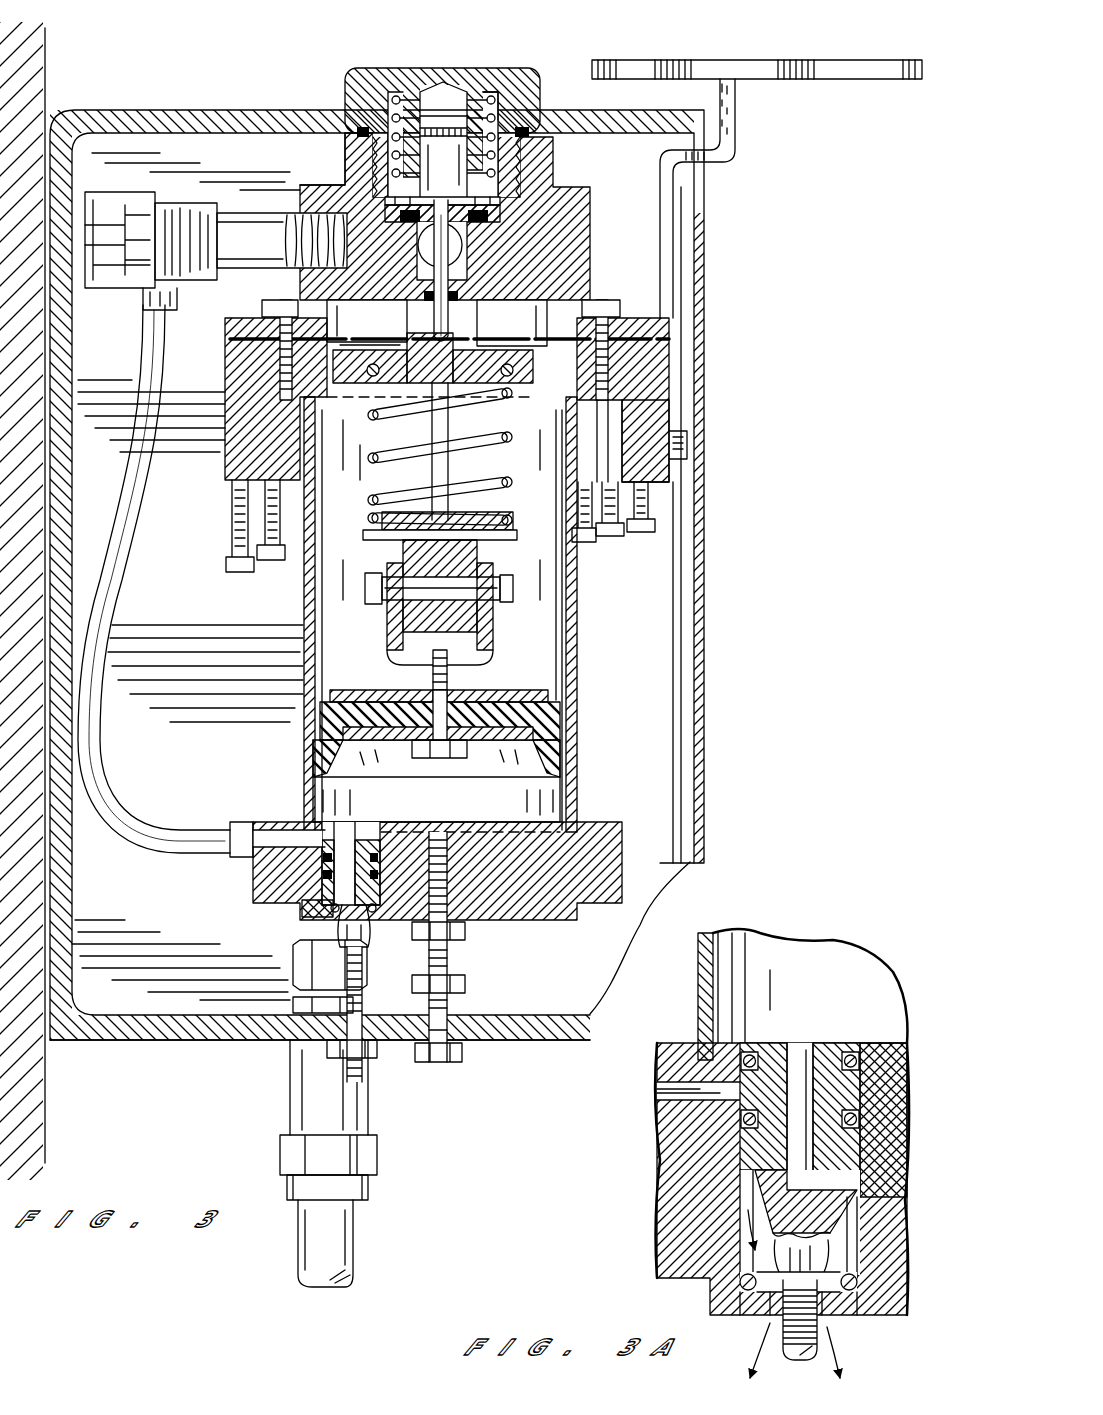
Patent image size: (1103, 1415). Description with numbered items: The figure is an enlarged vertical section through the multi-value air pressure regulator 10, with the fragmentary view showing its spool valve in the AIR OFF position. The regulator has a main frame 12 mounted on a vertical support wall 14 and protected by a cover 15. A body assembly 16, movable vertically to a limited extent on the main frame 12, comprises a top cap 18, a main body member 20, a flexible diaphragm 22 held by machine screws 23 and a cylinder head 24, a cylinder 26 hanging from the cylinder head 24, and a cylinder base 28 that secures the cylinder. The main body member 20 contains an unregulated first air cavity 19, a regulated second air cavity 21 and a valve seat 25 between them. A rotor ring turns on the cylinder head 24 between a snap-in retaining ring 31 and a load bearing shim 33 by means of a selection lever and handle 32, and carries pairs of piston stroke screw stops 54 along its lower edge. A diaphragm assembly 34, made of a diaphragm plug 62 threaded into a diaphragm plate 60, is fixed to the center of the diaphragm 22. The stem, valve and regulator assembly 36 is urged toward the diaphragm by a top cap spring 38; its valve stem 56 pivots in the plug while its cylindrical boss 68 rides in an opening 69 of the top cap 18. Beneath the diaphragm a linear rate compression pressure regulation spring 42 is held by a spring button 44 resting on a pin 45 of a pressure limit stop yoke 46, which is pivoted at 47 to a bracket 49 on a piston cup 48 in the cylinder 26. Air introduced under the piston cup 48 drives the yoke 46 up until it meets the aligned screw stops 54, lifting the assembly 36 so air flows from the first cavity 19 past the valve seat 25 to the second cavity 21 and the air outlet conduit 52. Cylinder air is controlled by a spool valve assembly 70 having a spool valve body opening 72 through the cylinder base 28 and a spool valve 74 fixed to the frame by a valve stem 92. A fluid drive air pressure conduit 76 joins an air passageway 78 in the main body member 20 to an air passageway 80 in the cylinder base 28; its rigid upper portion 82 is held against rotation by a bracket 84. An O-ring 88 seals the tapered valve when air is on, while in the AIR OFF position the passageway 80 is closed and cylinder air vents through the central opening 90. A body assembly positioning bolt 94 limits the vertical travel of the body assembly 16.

In FIG. 3, the multi-value air pressure regulator 10 is at (652, 644).
In FIG. 3, the main frame 12 is at (132, 1040).
In FIG. 3, the vertical support wall 14 is at (50, 98).
In FIG. 3, the cover 15 is at (705, 230).
In FIG. 3, the body assembly 16 is at (598, 800).
In FIG. 3, the top cap 18 is at (366, 74).
In FIG. 3, the unregulated first air cavity 19 is at (368, 182).
In FIG. 3, the main body member 20 is at (328, 180).
In FIG. 3, the regulated second air cavity 21 is at (466, 252).
In FIG. 3, the flexible diaphragm 22 is at (343, 343).
In FIG. 3, the machine screws 23 is at (612, 326).
In FIG. 3, the cylinder head 24 is at (632, 386).
In FIG. 3, the valve seat 25 is at (518, 207).
In FIG. 3, the cylinder 26 is at (306, 678).
In FIG. 3A, the cylinder 26 is at (825, 967).
In FIG. 3, the cylinder base 28 is at (598, 905).
In FIG. 3A, the cylinder base 28 is at (672, 1208).
In FIG. 3, the snap-in retaining ring 31 is at (662, 343).
In FIG. 3, the selection lever and handle 32 is at (738, 82).
In FIG. 3, the load bearing shim 33 is at (670, 396).
In FIG. 3, the diaphragm assembly 34 is at (458, 340).
In FIG. 3, the stem, valve and regulator assembly 36 is at (556, 195).
In FIG. 3, the top cap spring 38 is at (504, 92).
In FIG. 3, the linear rate compression pressure regulation spring 42 is at (511, 480).
In FIG. 3, the spring button 44 is at (390, 540).
In FIG. 3, the pin 45 is at (480, 556).
In FIG. 3, the pressure limit stop yoke 46 is at (412, 610).
In FIG. 3, the pivot 47 is at (446, 640).
In FIG. 3, the piston cup 48 is at (562, 705).
In FIG. 3, the bracket 49 is at (485, 660).
In FIG. 3, the air outlet conduit 52 is at (450, 238).
In FIG. 3, the piston stroke screw stops 54 is at (270, 560).
In FIG. 3, the valve stem 56 is at (448, 293).
In FIG. 3, the diaphragm plate 60 is at (357, 384).
In FIG. 3, the diaphragm plug 62 is at (380, 352).
In FIG. 3, the cylindrical boss 68 is at (440, 150).
In FIG. 3, the opening 69 is at (482, 112).
In FIG. 3, the spool valve assembly 70 is at (296, 906).
In FIG. 3A, the spool valve assembly 70 is at (779, 1036).
In FIG. 3, the spool valve body opening 72 is at (393, 842).
In FIG. 3A, the spool valve body opening 72 is at (748, 1250).
In FIG. 3, the spool valve 74 is at (428, 834).
In FIG. 3A, the spool valve 74 is at (917, 1087).
In FIG. 3, the fluid drive air pressure conduit 76 is at (108, 792).
In FIG. 3, the air passageway 78 is at (318, 282).
In FIG. 3, the air passageway 80 is at (290, 822).
In FIG. 3A, the air passageway 80 is at (657, 1090).
In FIG. 3, the upper portion of the conduit 82 is at (192, 213).
In FIG. 3, the bracket 84 is at (115, 203).
In FIG. 3, the O-ring 88 is at (367, 910).
In FIG. 3A, the O-ring 88 is at (740, 1296).
In FIG. 3, the central opening 90 is at (345, 840).
In FIG. 3A, the central opening 90 is at (804, 1070).
In FIG. 3, the valve stem 92 is at (300, 985).
In FIG. 3A, the valve stem 92 is at (823, 1328).
In FIG. 3, the body assembly positioning bolt 94 is at (452, 1002).